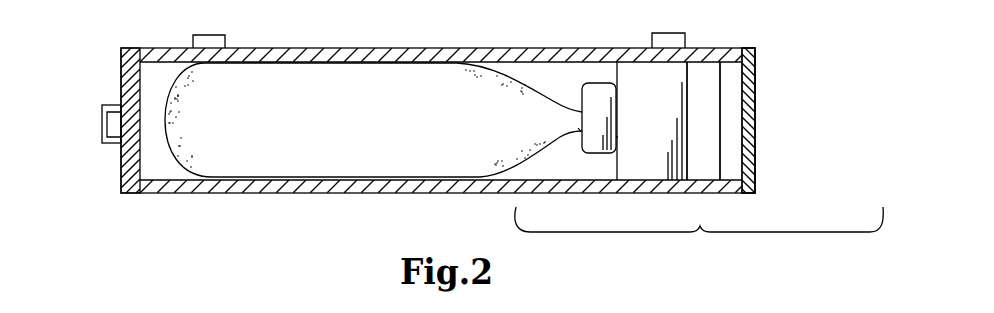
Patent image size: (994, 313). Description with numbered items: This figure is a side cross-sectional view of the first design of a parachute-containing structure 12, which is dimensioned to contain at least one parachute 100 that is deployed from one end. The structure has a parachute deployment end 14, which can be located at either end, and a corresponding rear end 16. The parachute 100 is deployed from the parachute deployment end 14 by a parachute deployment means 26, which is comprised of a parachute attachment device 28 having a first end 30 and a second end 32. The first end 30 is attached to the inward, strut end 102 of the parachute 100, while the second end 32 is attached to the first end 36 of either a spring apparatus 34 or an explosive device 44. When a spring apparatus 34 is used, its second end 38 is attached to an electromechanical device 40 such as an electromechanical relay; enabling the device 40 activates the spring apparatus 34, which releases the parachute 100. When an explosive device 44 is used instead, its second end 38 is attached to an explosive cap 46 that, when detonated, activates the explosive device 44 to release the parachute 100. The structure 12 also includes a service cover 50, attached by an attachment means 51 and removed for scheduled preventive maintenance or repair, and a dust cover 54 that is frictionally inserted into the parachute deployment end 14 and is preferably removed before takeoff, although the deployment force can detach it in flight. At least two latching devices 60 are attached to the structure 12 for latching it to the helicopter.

The parachute-containing structure 12 is at (400, 56).
The parachute deployment end 14 is at (153, 157).
The rear end 16 is at (733, 65).
The parachute deployment means 26 is at (699, 241).
The parachute attachment device 28 is at (594, 147).
The first end 30 is at (580, 136).
The second end 32 is at (618, 138).
The spring apparatus 34 is at (765, 157).
The first end 36 is at (613, 65).
The second end 38 is at (693, 162).
The electromechanical device 40 is at (784, 121).
The explosive device 44 is at (658, 162).
The explosive cap 46 is at (700, 106).
The service cover 50 is at (745, 138).
The attachment means 51 is at (728, 66).
The dust cover 54 is at (121, 74).
The latching devices 60 is at (215, 41).
The parachute 100 is at (271, 78).
The strut end 102 is at (357, 151).